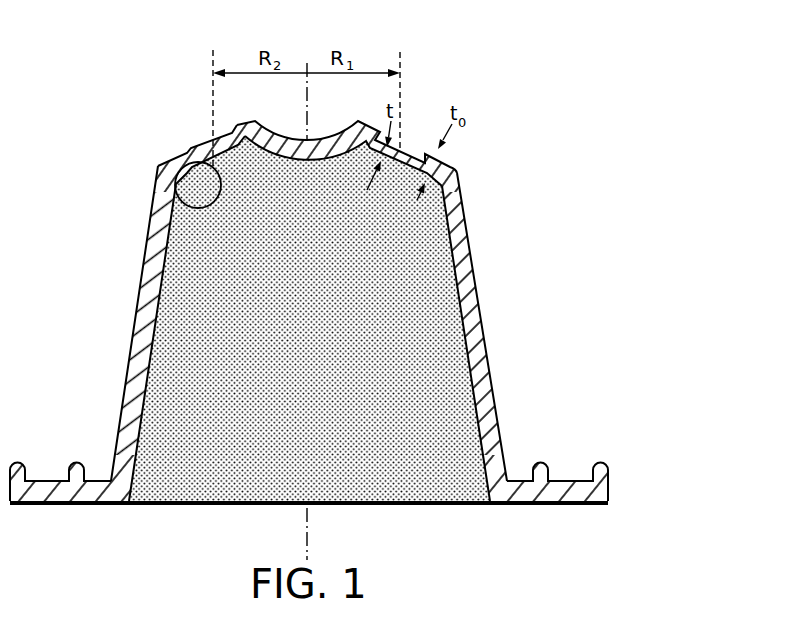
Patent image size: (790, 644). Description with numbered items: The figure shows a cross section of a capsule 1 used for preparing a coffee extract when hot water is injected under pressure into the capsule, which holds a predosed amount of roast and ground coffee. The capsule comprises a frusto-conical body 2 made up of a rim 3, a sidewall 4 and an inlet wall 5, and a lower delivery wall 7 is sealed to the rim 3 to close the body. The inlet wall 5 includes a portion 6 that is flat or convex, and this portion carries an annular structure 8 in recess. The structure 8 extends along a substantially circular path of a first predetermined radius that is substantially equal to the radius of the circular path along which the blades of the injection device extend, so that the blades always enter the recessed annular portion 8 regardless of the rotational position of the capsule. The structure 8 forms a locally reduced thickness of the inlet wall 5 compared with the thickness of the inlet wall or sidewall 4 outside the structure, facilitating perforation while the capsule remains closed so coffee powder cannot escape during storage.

The capsule 1 is at (527, 308).
The frusto-conical body 2 is at (472, 252).
The rim 3 is at (569, 481).
The sidewall 4 is at (493, 388).
The inlet wall 5 is at (424, 120).
The flat or convex portion 6 is at (237, 123).
The lower delivery wall 7 is at (455, 506).
The annular structure in recess 8 is at (200, 208).